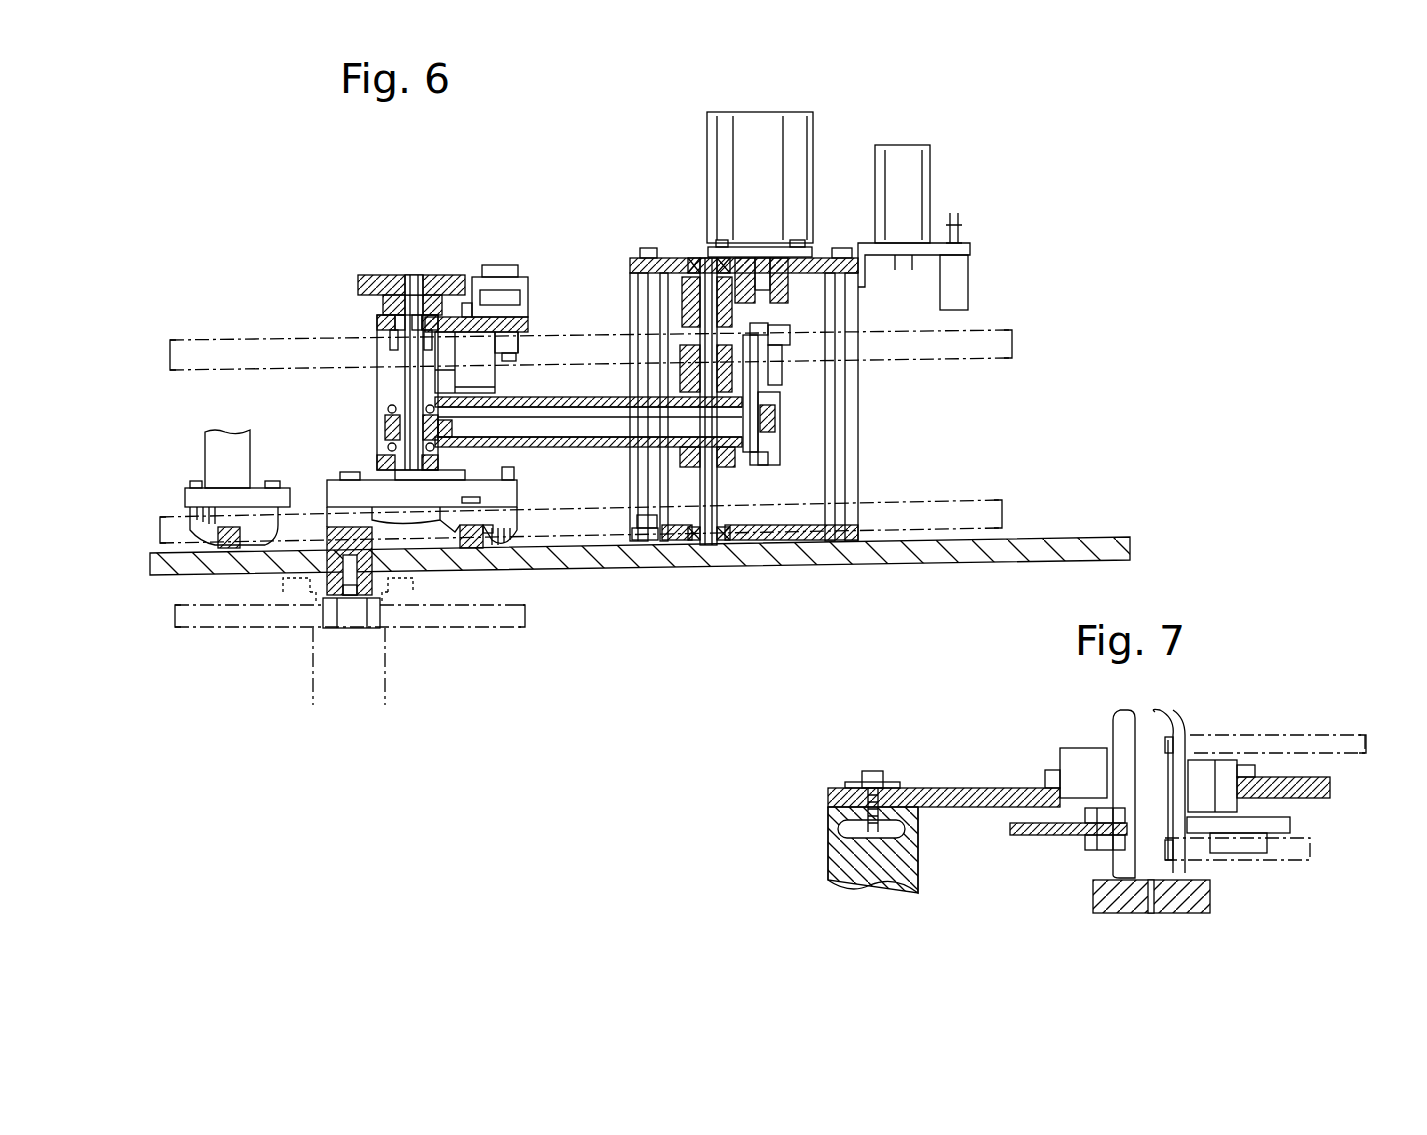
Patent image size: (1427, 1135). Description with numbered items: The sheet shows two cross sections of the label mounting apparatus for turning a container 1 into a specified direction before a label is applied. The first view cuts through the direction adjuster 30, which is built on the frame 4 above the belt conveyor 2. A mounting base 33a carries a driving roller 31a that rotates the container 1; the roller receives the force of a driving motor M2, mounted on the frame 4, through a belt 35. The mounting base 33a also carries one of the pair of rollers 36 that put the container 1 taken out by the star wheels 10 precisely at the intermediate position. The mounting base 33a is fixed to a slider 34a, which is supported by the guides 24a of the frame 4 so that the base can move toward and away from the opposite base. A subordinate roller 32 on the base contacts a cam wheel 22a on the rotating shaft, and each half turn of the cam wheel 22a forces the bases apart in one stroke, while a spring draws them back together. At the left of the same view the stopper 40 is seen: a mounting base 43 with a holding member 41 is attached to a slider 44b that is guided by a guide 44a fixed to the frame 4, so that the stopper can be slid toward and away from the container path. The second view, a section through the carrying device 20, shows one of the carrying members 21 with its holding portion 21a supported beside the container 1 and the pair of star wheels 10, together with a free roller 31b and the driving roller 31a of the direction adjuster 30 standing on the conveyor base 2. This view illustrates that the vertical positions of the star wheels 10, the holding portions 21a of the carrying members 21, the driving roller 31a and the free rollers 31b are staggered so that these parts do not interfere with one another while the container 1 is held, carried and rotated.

In FIG. 7, the container 1 is at (1178, 722).
In FIG. 6, the belt conveyor 2 is at (998, 360).
In FIG. 7, the belt conveyor 2 is at (1195, 895).
In FIG. 6, the frame 4 is at (1058, 548).
In FIG. 7, the star wheels 10 is at (1360, 732).
In FIG. 7, the carrying device 20 is at (930, 778).
In FIG. 7, the carrying members 21 is at (992, 782).
In FIG. 7, the holding portions 21a is at (1100, 750).
In FIG. 6, the cam wheel 22a is at (480, 627).
In FIG. 6, the guides 24a is at (470, 552).
In FIG. 6, the direction adjuster 30 is at (562, 160).
In FIG. 7, the direction adjuster 30 is at (1038, 842).
In FIG. 6, the driving roller 31a is at (383, 275).
In FIG. 7, the driving roller 31a is at (1290, 825).
In FIG. 7, the free rollers 31b is at (1085, 840).
In FIG. 6, the subordinate rollers 32 is at (350, 614).
In FIG. 6, the mounting base 33a is at (378, 320).
In FIG. 6, the sliders 34a is at (512, 515).
In FIG. 6, the belt 35 is at (578, 397).
In FIG. 6, the rollers 36 is at (505, 264).
In FIG. 6, the stopper 40 is at (184, 510).
In FIG. 6, the holding member 41 is at (203, 470).
In FIG. 6, the mounting bases 43 is at (215, 448).
In FIG. 6, the guides 44a is at (230, 560).
In FIG. 6, the sliders 44b is at (200, 530).
In FIG. 6, the driving motor M2 is at (760, 120).